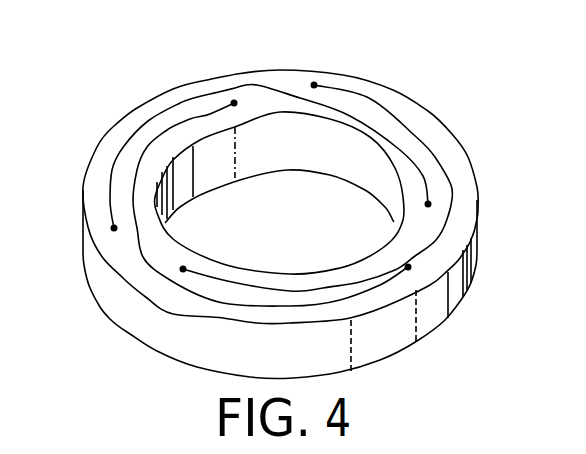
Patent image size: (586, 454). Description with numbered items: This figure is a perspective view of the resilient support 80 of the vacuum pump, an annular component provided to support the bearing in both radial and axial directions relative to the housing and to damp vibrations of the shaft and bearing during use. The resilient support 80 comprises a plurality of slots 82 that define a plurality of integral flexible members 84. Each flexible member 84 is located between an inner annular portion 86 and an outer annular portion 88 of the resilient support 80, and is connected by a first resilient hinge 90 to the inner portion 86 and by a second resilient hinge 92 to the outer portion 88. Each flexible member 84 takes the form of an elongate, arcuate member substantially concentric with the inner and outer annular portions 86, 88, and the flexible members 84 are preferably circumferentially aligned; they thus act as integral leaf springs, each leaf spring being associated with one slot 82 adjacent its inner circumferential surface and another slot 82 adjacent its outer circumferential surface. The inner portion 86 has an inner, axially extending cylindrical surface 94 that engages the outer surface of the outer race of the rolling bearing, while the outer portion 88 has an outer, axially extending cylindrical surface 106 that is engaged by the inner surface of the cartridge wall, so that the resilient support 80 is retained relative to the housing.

The resilient support 80 is at (466, 135).
The slots 82 is at (392, 104).
The flexible members 84 is at (120, 197).
The inner annular portion 86 is at (157, 153).
The outer annular portion 88 is at (265, 72).
The first resilient hinge 90 is at (240, 93).
The second resilient hinge 92 is at (127, 233).
The inner axially extending cylindrical surface 94 is at (287, 130).
The outer axially extending cylindrical surface 106 is at (133, 324).